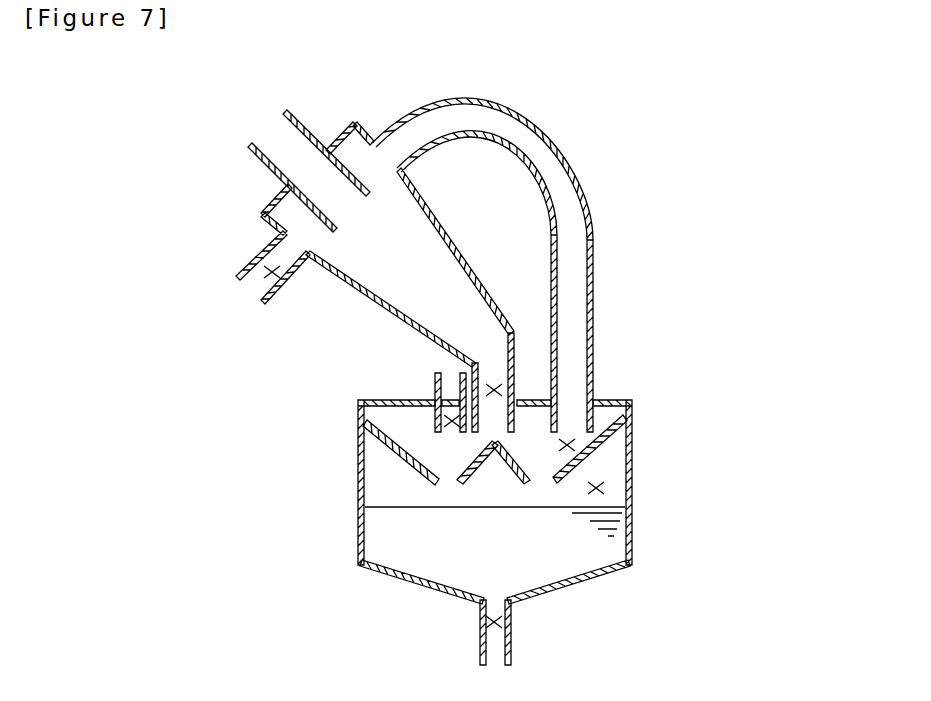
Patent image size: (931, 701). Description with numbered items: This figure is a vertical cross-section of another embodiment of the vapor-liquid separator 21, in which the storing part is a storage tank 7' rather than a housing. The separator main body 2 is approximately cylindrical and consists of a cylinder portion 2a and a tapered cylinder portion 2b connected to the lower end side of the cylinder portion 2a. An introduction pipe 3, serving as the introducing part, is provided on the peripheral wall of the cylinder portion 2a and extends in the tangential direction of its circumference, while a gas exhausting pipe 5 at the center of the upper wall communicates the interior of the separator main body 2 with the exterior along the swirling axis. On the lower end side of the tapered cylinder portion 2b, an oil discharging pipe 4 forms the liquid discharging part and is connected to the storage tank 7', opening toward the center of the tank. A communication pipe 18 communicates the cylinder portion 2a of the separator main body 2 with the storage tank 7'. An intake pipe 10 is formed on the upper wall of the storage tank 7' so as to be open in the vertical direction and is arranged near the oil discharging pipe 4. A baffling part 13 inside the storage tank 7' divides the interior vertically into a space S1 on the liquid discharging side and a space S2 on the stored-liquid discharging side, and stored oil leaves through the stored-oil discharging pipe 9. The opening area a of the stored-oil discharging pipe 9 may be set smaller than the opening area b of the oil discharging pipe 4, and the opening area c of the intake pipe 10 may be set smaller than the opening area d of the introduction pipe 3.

The separator main body 2 is at (368, 327).
The cylinder portion 2a is at (367, 128).
The tapered cylinder portion 2b is at (450, 230).
The introduction pipe 3 is at (256, 266).
The oil discharging pipe 4 is at (516, 381).
The gas exhausting pipe 5 is at (294, 114).
The storage tank 7' is at (532, 502).
The stored-oil discharging pipe 9 is at (512, 637).
The intake pipe 10 is at (433, 375).
The baffling part 13 is at (383, 468).
The communication pipe 18 is at (538, 121).
The vapor-liquid separator 21 is at (562, 255).
The opening area of the stored-liquid discharging part a is at (488, 627).
The opening area of the liquid discharging part b is at (499, 383).
The opening area of the intake part c is at (441, 421).
The opening area of the introducing part d is at (275, 287).
The space on the liquid discharging part side S1 is at (580, 442).
The space on the stored-liquid discharging part side S2 is at (604, 491).